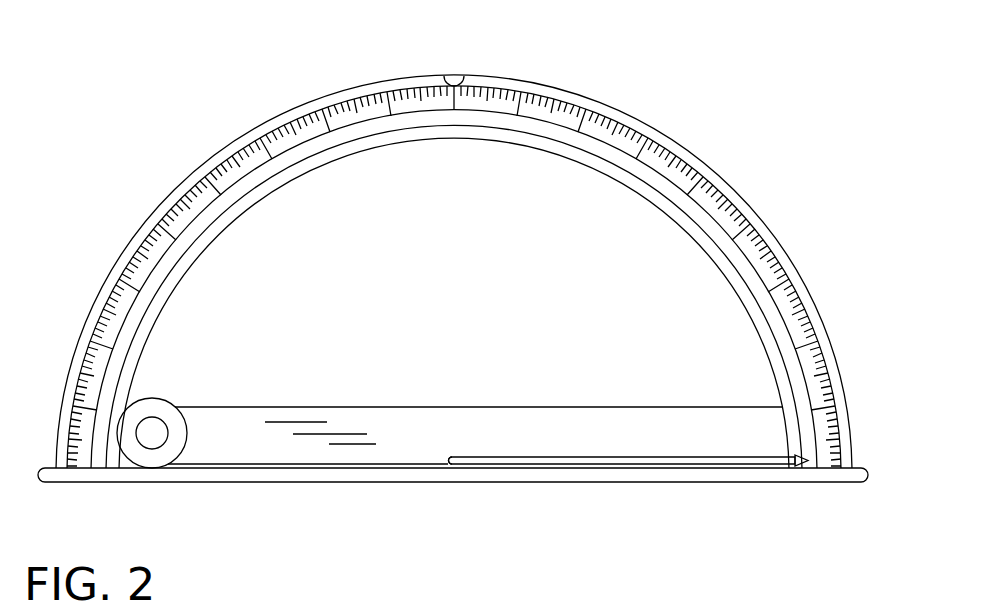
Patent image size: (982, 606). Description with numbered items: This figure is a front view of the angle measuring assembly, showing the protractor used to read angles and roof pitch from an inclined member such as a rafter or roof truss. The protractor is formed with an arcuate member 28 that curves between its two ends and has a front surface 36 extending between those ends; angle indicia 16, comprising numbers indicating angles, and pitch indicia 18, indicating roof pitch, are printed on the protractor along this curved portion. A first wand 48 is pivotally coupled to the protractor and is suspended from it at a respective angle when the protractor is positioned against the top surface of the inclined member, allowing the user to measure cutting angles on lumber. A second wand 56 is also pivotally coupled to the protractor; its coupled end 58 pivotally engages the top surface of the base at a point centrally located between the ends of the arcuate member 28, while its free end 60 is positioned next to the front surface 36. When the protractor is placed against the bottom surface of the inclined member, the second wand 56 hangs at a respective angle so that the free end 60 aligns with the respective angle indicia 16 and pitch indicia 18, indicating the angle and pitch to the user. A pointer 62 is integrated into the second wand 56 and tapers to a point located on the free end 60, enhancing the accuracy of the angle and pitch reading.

The angle indicia 16 is at (300, 114).
The pitch indicia 18 is at (260, 212).
The arcuate member 28 is at (585, 100).
The front surface 36 is at (143, 270).
The first wand 48 is at (367, 434).
The second wand 56 is at (655, 457).
The coupled end 58 is at (448, 462).
The free end 60 is at (810, 460).
The pointer 62 is at (797, 455).